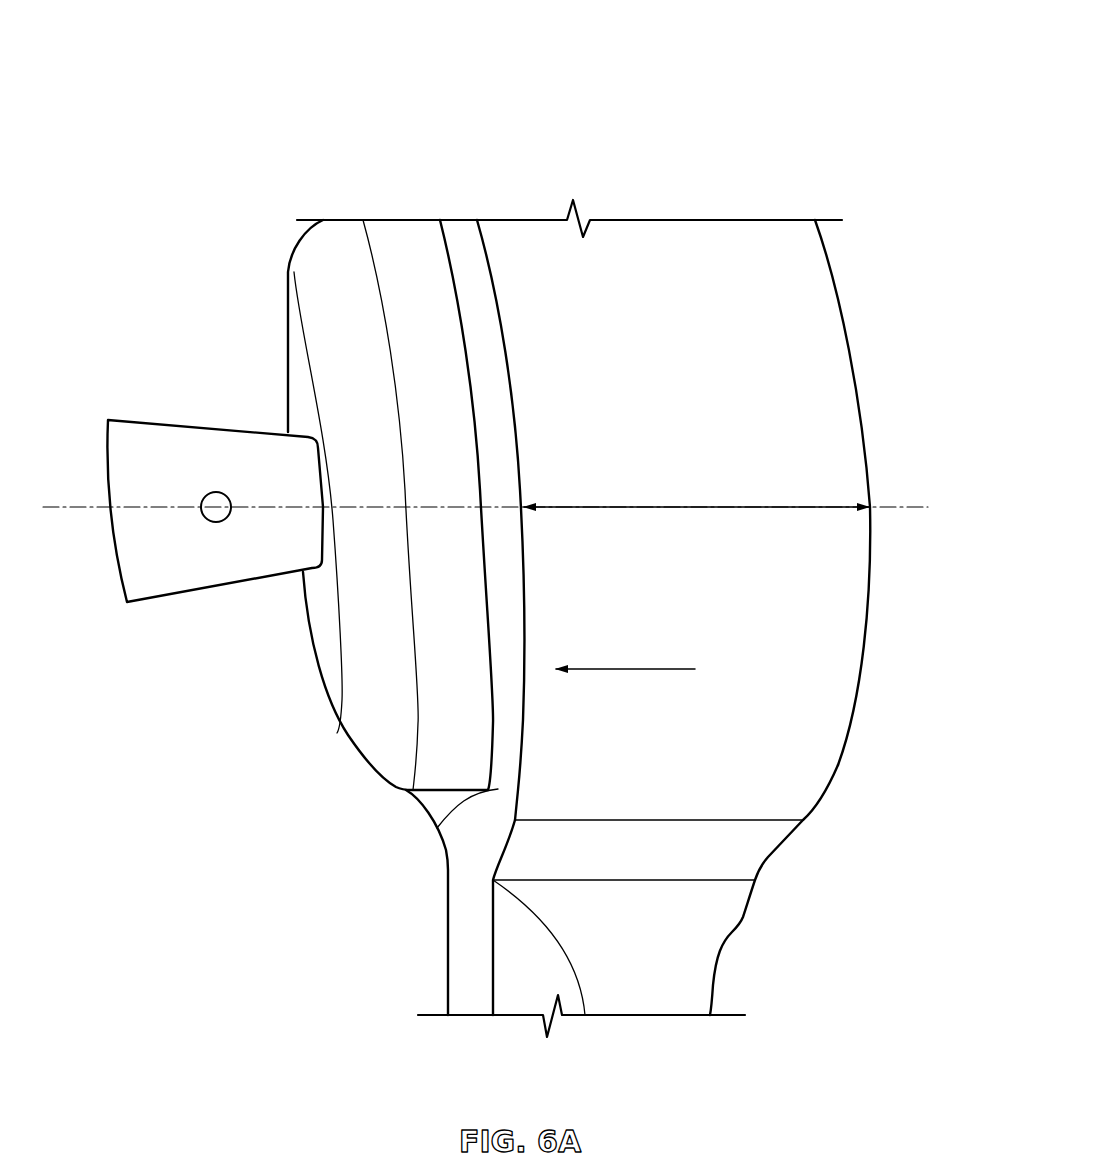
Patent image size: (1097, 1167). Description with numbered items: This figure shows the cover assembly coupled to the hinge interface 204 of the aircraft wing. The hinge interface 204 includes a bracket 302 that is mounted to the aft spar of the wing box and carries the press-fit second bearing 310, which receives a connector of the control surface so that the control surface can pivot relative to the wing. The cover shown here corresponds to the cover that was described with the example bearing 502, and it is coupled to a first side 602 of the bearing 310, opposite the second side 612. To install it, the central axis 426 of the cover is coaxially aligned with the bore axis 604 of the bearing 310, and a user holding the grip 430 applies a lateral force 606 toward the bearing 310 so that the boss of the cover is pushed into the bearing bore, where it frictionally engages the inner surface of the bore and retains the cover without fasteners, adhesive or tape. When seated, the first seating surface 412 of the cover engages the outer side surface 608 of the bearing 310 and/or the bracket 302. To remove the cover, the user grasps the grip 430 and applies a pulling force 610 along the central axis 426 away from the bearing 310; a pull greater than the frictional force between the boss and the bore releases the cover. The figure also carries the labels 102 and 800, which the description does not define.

The gas turbine engine 102 is at (870, 46).
The hinge interface 204 is at (847, 148).
The bracket 302 is at (710, 282).
The second bearing 310 is at (879, 722).
The balance assembly 800 is at (218, 210).
The bearing 502 is at (335, 262).
The first seating surface 412 is at (465, 235).
The grip 430 is at (147, 445).
The central axis 426 is at (57, 510).
The first side 602 is at (478, 867).
The bore axis 604 is at (905, 507).
The lateral force 606 is at (690, 505).
The outer side surface 608 is at (438, 827).
The pulling force 610 is at (628, 667).
The second side 612 is at (894, 590).